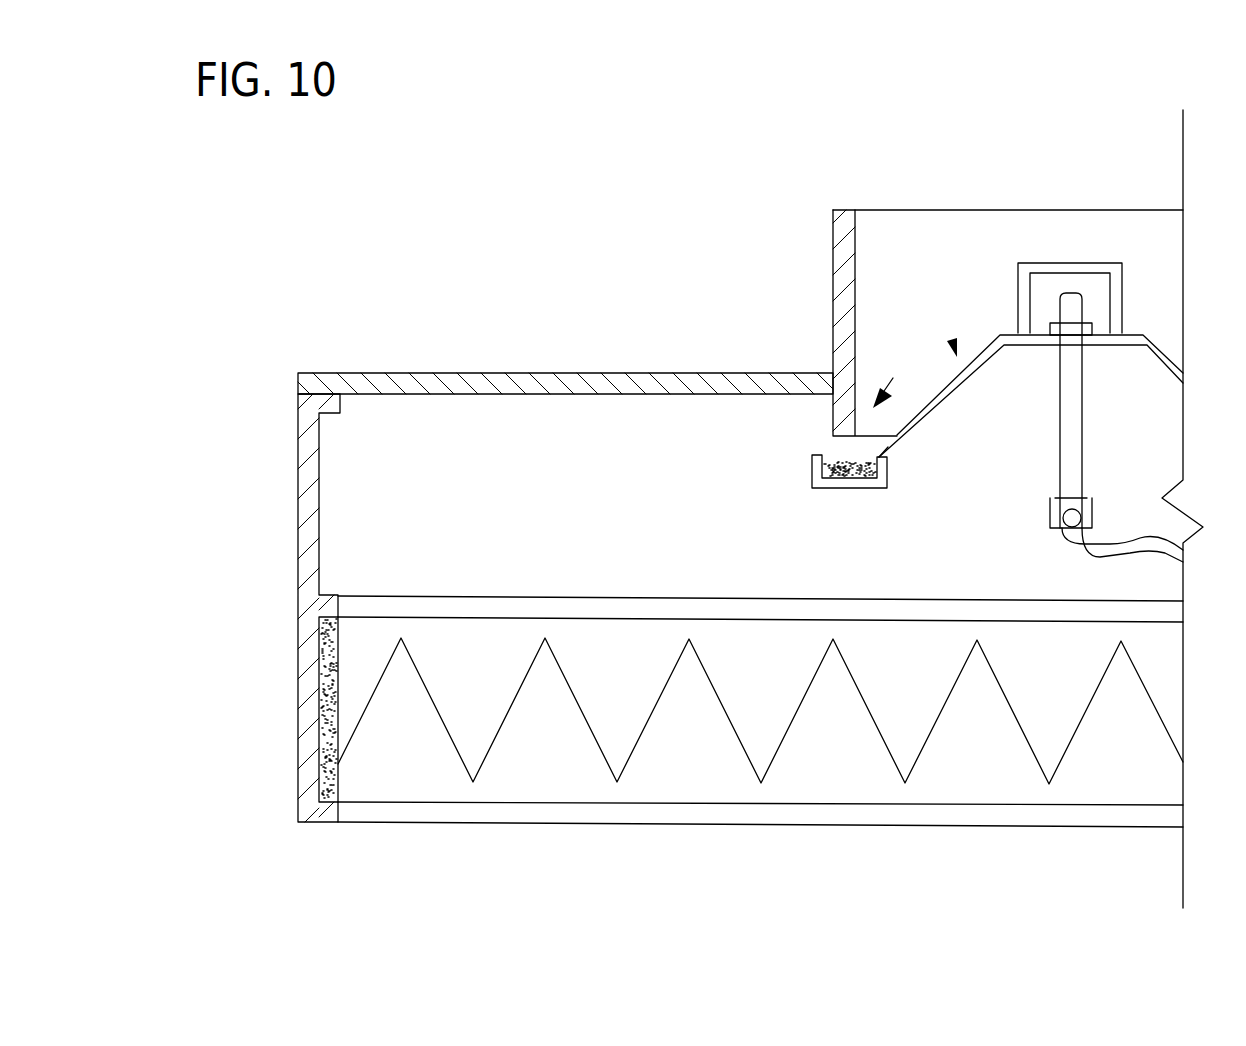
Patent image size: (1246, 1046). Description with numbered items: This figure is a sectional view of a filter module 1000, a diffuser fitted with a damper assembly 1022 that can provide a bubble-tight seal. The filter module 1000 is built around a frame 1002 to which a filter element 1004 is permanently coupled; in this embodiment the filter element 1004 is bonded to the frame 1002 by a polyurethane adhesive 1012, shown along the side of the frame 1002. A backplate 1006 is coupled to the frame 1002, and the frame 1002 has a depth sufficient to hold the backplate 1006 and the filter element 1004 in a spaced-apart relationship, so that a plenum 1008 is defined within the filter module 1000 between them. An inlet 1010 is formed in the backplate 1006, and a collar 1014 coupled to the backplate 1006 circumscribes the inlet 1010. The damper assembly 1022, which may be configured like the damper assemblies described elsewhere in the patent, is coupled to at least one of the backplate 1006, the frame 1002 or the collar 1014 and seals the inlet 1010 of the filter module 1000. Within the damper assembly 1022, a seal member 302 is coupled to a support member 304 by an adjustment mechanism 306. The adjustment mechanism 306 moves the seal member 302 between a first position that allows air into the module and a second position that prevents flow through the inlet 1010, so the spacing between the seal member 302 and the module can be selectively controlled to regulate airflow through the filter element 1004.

The filter module 1000 is at (543, 236).
The frame 1002 is at (298, 426).
The filter element 1004 is at (904, 798).
The backplate 1006 is at (402, 373).
The plenum 1008 is at (596, 520).
The inlet 1010 is at (893, 378).
The polyurethane adhesive 1012 is at (328, 782).
The collar 1014 is at (833, 258).
The damper assembly 1022 is at (953, 342).
The seal member 302 is at (998, 333).
The support member 304 is at (1030, 529).
The adjustment mechanism 306 is at (1040, 447).